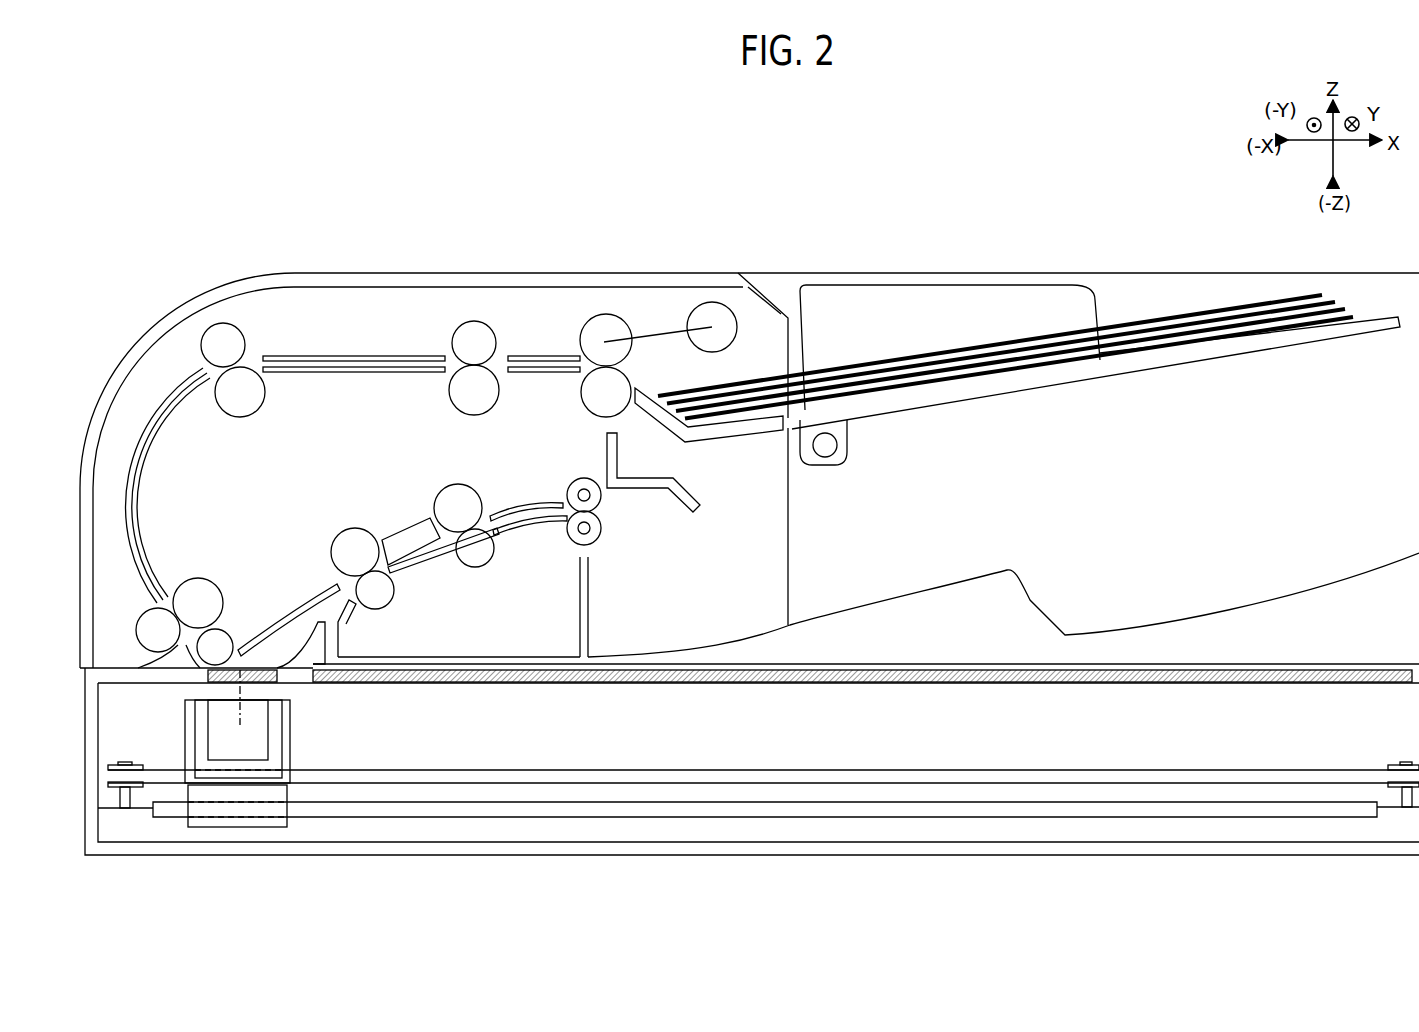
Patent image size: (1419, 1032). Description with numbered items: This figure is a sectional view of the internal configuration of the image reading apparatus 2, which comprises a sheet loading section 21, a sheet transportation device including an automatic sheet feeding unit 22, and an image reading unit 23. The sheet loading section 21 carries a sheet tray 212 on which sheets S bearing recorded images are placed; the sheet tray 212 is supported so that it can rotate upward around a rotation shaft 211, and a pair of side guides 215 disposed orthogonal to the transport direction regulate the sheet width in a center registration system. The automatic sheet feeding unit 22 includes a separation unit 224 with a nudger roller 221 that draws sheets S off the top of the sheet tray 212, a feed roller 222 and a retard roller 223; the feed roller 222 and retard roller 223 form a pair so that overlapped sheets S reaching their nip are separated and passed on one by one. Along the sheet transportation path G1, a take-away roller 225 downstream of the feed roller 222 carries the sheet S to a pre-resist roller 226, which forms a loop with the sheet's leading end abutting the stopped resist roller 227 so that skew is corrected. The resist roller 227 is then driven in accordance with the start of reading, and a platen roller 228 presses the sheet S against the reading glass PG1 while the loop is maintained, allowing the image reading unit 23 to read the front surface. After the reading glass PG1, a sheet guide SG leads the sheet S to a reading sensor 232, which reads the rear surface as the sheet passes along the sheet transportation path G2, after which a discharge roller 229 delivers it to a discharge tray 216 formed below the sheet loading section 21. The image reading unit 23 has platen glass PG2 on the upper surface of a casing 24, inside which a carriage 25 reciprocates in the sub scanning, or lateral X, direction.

The image reading apparatus 2 is at (146, 288).
The sheet loading section 21 is at (942, 270).
The automatic sheet feeding unit 22 is at (383, 432).
The image reading unit 23 is at (735, 735).
The casing 24 is at (432, 850).
The carriage 25 is at (287, 747).
The rotation shaft 211 is at (830, 446).
The sheet tray 212 is at (1133, 367).
The side guides 215 is at (913, 313).
The discharge tray 216 is at (1203, 630).
The nudger roller 221 is at (712, 327).
The feed roller 222 is at (604, 342).
The retard roller 223 is at (600, 392).
The separation unit 224 is at (576, 330).
The take-away roller 225 is at (446, 331).
The pre-resist roller 226 is at (250, 339).
The resist roller 227 is at (175, 576).
The platen roller 228 is at (214, 642).
The discharge roller 229 is at (566, 526).
The reading sensor 232 is at (420, 538).
The sheet transportation path G1 is at (420, 355).
The sheet transportation path G2 is at (516, 503).
The sheet S is at (1118, 318).
The sheet guide SG is at (313, 653).
The reading glass PG1 is at (225, 670).
The platen glass PG2 is at (940, 685).